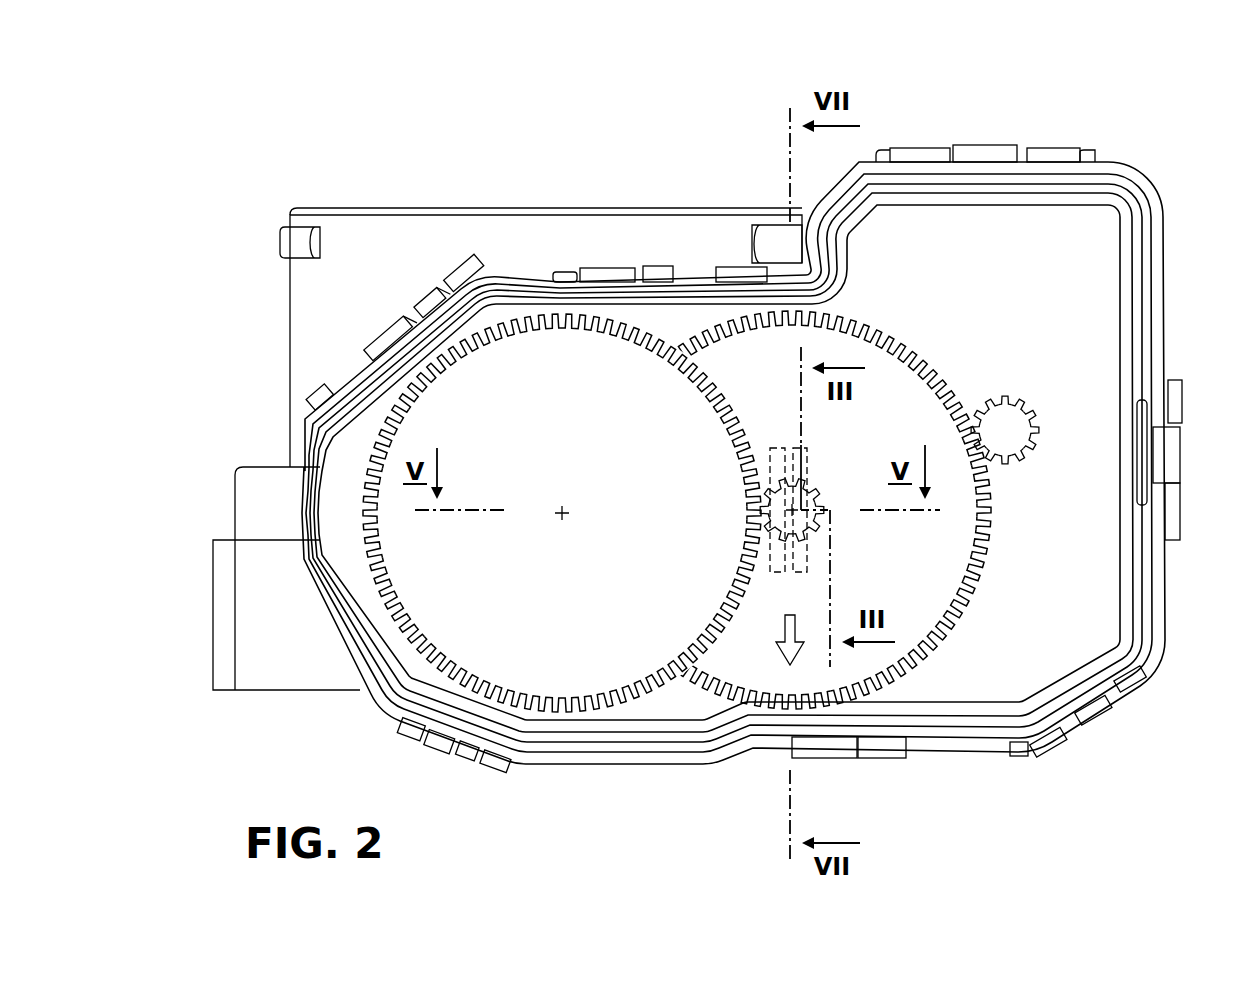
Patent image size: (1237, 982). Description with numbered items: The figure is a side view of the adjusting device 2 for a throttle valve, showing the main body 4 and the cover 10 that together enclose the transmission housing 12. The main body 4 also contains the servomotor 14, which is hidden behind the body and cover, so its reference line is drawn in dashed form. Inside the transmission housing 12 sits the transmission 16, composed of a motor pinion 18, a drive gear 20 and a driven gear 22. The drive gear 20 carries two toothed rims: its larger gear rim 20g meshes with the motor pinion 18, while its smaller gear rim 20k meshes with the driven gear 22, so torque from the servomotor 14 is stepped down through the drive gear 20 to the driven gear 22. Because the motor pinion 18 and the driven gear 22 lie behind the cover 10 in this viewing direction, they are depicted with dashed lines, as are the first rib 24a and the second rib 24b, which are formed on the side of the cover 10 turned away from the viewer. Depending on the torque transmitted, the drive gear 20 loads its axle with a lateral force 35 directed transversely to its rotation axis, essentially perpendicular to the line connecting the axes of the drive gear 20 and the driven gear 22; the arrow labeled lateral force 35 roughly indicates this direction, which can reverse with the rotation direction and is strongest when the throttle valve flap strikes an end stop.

The adjusting device 2 is at (712, 120).
The main body 4 is at (435, 228).
The cover 10 is at (345, 455).
The transmission housing 12 is at (970, 665).
The servomotor 14 is at (1025, 290).
The transmission 16 is at (690, 332).
The motor pinion 18 is at (1012, 452).
The drive gear 20 is at (905, 400).
The larger gear rim 20g is at (978, 590).
The smaller gear rim 20k is at (826, 512).
The driven gear 22 is at (565, 688).
The first rib 24a is at (782, 565).
The second rib 24b is at (800, 572).
The lateral force 35 is at (794, 655).